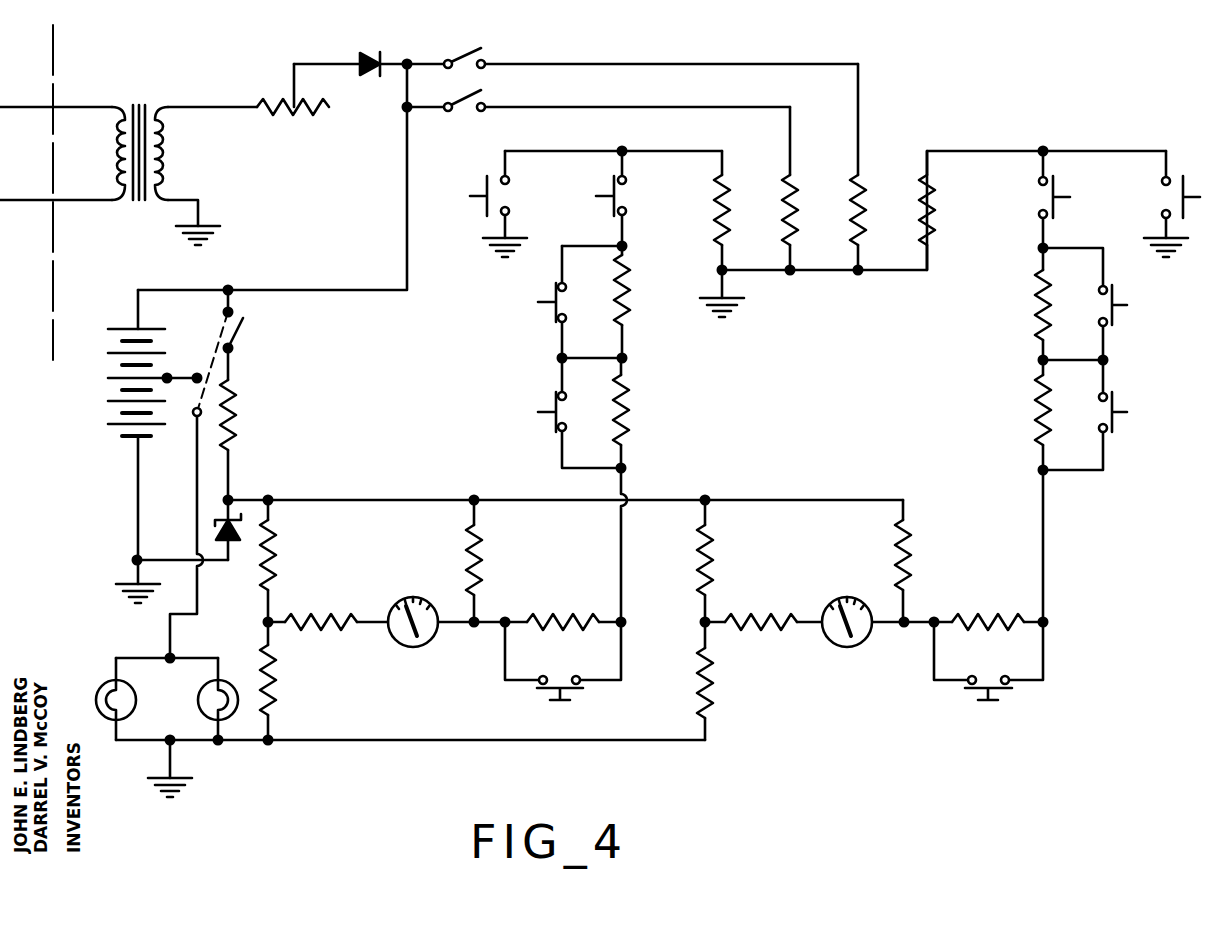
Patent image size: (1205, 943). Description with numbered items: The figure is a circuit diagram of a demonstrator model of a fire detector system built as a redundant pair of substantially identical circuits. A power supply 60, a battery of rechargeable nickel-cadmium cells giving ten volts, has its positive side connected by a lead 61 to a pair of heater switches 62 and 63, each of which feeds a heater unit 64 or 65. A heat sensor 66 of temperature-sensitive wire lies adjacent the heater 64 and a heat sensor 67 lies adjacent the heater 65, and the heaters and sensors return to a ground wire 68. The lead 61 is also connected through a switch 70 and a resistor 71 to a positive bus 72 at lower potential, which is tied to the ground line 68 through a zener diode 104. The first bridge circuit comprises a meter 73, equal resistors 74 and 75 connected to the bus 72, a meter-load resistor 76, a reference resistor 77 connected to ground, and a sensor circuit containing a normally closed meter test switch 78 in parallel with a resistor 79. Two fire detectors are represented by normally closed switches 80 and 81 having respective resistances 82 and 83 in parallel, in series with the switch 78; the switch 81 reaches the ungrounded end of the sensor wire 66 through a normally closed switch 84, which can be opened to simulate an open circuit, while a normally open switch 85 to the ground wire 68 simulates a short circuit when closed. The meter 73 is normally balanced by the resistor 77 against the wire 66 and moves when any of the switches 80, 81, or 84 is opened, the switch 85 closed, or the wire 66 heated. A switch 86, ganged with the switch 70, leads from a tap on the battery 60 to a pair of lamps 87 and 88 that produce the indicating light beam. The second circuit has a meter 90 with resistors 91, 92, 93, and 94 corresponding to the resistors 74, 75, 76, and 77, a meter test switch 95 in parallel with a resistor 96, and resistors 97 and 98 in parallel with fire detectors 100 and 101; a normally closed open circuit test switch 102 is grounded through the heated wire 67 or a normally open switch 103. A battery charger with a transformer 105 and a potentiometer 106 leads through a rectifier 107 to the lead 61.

The power supply 60 is at (108, 378).
The lead 61 is at (310, 290).
The heater switch 62 is at (462, 110).
The heater switch 63 is at (468, 55).
The heater unit 64 is at (782, 210).
The heater unit 65 is at (852, 210).
The heat sensor 66 is at (714, 233).
The heat sensor 67 is at (935, 218).
The ground wire 68 is at (482, 250).
The switch 70 is at (245, 323).
The resistor 71 is at (236, 418).
The positive bus 72 is at (412, 498).
The meter 73 is at (418, 597).
The resistor 74 is at (277, 563).
The resistor 75 is at (481, 569).
The meter-load resistor 76 is at (330, 619).
The reference resistor 77 is at (278, 684).
The meter test switch 78 is at (572, 690).
The resistor 79 is at (560, 622).
The switch 80 is at (554, 430).
The switch 81 is at (555, 318).
The resistance 82 is at (630, 440).
The resistance 83 is at (628, 322).
The switch 84 is at (627, 201).
The switch 85 is at (488, 210).
The switch 86 is at (190, 418).
The lamp 87 is at (101, 685).
The lamp 88 is at (198, 689).
The meter 90 is at (840, 650).
The resistor 91 is at (711, 572).
The resistor 92 is at (910, 573).
The resistor 93 is at (778, 630).
The resistor 94 is at (712, 690).
The meter test switch 95 is at (1000, 690).
The resistor 96 is at (984, 619).
The resistor 97 is at (1036, 426).
The resistor 98 is at (1036, 323).
The fire detector 100 is at (1110, 428).
The fire detector 101 is at (1110, 322).
The open circuit test switch 102 is at (1050, 212).
The switch 103 is at (1180, 197).
The zener diode 104 is at (233, 545).
The transformer 105 is at (141, 103).
The potentiometer 106 is at (299, 112).
The rectifier 107 is at (379, 53).